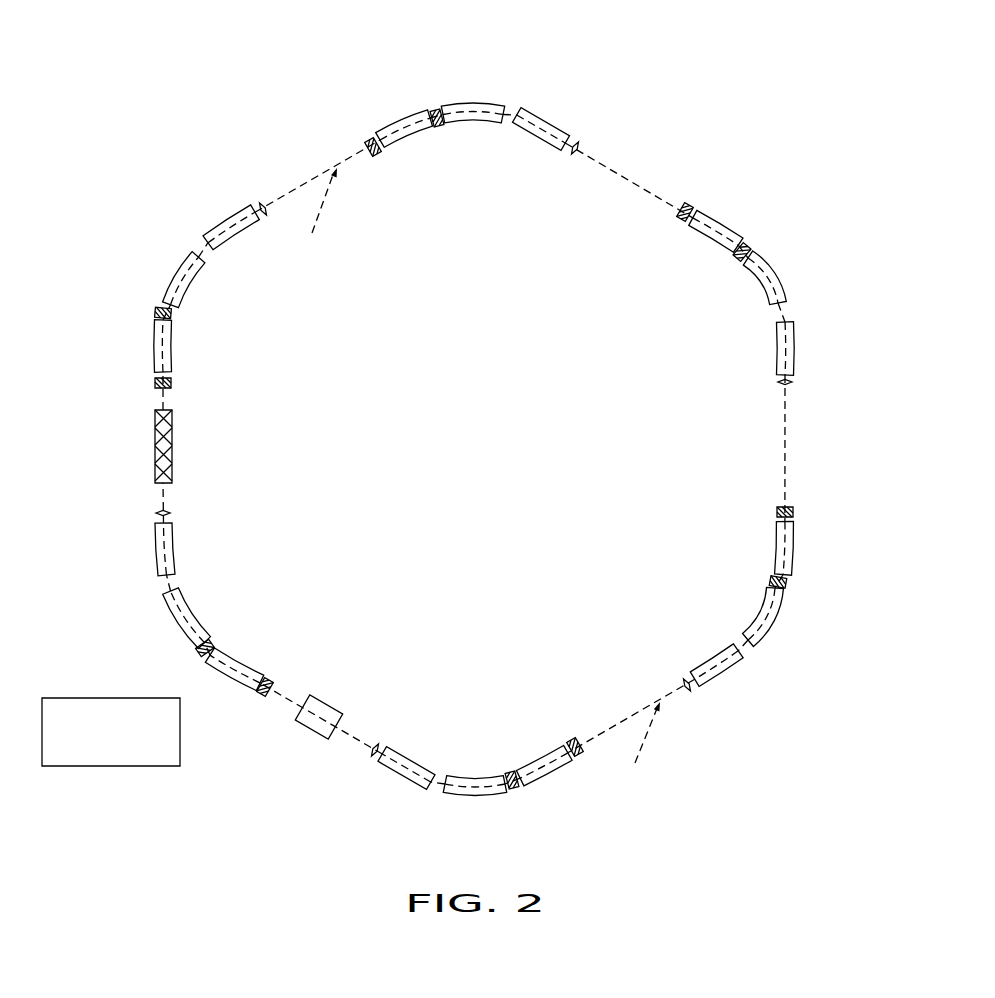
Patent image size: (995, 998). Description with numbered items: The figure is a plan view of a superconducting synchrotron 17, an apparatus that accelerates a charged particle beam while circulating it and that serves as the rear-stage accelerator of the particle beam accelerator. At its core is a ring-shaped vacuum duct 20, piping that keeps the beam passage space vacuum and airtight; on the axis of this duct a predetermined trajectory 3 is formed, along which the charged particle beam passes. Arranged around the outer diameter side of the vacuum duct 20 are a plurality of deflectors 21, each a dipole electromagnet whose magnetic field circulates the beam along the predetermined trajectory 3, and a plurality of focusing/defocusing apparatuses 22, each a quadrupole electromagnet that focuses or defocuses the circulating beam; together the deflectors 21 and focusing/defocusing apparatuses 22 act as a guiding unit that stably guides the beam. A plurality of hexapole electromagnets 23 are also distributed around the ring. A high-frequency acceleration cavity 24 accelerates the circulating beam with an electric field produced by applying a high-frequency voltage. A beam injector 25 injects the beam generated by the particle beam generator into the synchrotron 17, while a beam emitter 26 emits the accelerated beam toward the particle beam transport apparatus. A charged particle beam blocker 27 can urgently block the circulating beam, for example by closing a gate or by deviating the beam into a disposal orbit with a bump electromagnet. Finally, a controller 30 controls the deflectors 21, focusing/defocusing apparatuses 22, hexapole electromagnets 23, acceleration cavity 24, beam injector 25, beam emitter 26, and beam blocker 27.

The superconducting synchrotron 17 is at (283, 87).
The vacuum duct 20 is at (631, 177).
The predetermined trajectory 3 is at (638, 188).
The deflector 21 is at (470, 105).
The focusing/defocusing apparatus 22 is at (371, 140).
The hexapole electromagnet 23 is at (576, 142).
The high-frequency acceleration cavity 24 is at (153, 436).
The beam injector 25 is at (317, 215).
The beam emitter 26 is at (642, 750).
The charged particle beam blocker 27 is at (326, 703).
The controller 30 is at (72, 698).